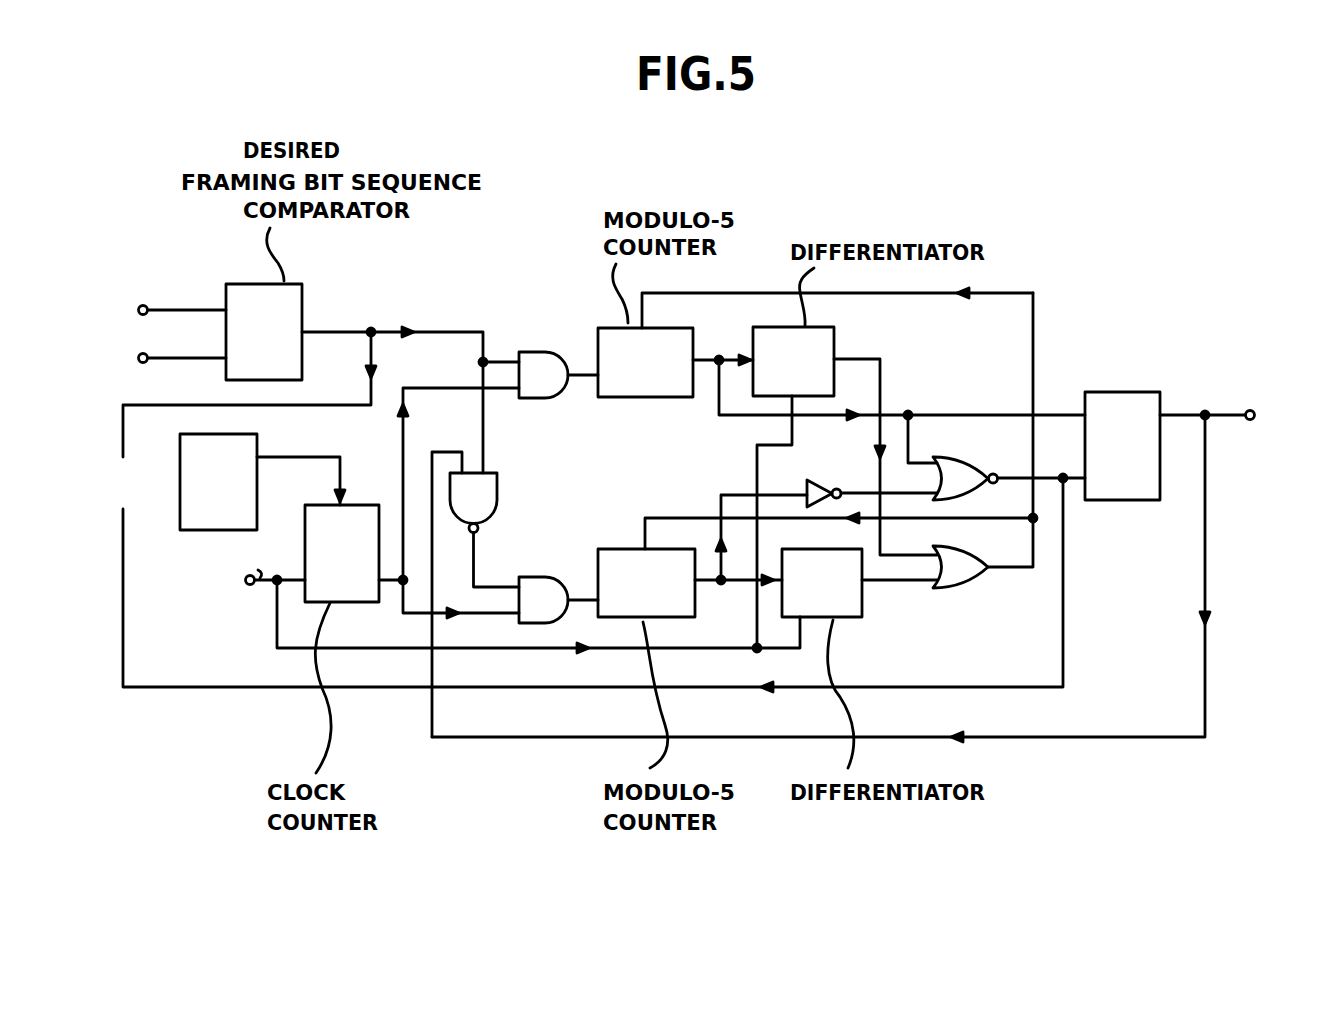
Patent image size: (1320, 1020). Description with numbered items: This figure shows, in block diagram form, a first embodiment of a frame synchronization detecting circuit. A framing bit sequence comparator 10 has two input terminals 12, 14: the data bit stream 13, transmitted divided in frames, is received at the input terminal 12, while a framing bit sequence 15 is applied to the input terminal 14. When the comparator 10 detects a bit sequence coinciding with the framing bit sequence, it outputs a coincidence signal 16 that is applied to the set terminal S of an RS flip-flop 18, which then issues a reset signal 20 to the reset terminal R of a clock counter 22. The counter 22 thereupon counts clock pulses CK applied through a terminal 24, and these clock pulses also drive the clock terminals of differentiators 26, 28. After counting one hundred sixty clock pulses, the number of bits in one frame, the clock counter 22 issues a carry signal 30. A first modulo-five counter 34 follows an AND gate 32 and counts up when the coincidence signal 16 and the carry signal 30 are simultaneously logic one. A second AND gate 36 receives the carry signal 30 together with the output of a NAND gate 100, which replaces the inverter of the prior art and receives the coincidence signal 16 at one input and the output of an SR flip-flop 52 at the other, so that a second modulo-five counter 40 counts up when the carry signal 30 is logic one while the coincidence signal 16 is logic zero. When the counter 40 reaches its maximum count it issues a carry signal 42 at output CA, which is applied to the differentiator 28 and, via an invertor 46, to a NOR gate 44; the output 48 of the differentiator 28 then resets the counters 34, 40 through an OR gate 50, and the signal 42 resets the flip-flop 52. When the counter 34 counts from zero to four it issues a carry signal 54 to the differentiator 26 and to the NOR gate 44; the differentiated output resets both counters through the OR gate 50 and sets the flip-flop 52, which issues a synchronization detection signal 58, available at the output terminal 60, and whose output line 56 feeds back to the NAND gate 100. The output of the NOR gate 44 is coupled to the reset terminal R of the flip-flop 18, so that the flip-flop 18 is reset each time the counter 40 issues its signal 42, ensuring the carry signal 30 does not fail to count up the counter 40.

The framing bit sequence comparator 10 is at (302, 310).
The input terminal 12 is at (139, 304).
The data bit stream 13 is at (182, 309).
The input terminal 14 is at (139, 353).
The framing bit sequence 15 is at (176, 360).
The coincidence signal 16 is at (468, 332).
The RS flip-flop 18 is at (180, 492).
The reset signal 20 is at (289, 457).
The clock counter 22 is at (377, 495).
The terminal 24 is at (245, 584).
The differentiator 26 is at (834, 341).
The differentiator 28 is at (836, 617).
The carry signal 30 is at (440, 456).
The AND gate 32 is at (550, 335).
The modulo-5 counter 34 is at (612, 397).
The AND gate 36 is at (550, 561).
The modulo-5 counter 40 is at (630, 549).
The carry signal 42 is at (721, 494).
The NOR gate 44 is at (945, 457).
The invertor 46 is at (821, 483).
The output 48 is at (880, 583).
The OR gate 50 is at (955, 589).
The SR flip-flop 52 is at (1120, 392).
The carry signal 54 is at (724, 358).
The first differentiator output line 56 is at (880, 368).
The synchronization detection signal 58 is at (1174, 412).
The output terminal 60 is at (1255, 411).
The NAND gate 100 is at (497, 485).